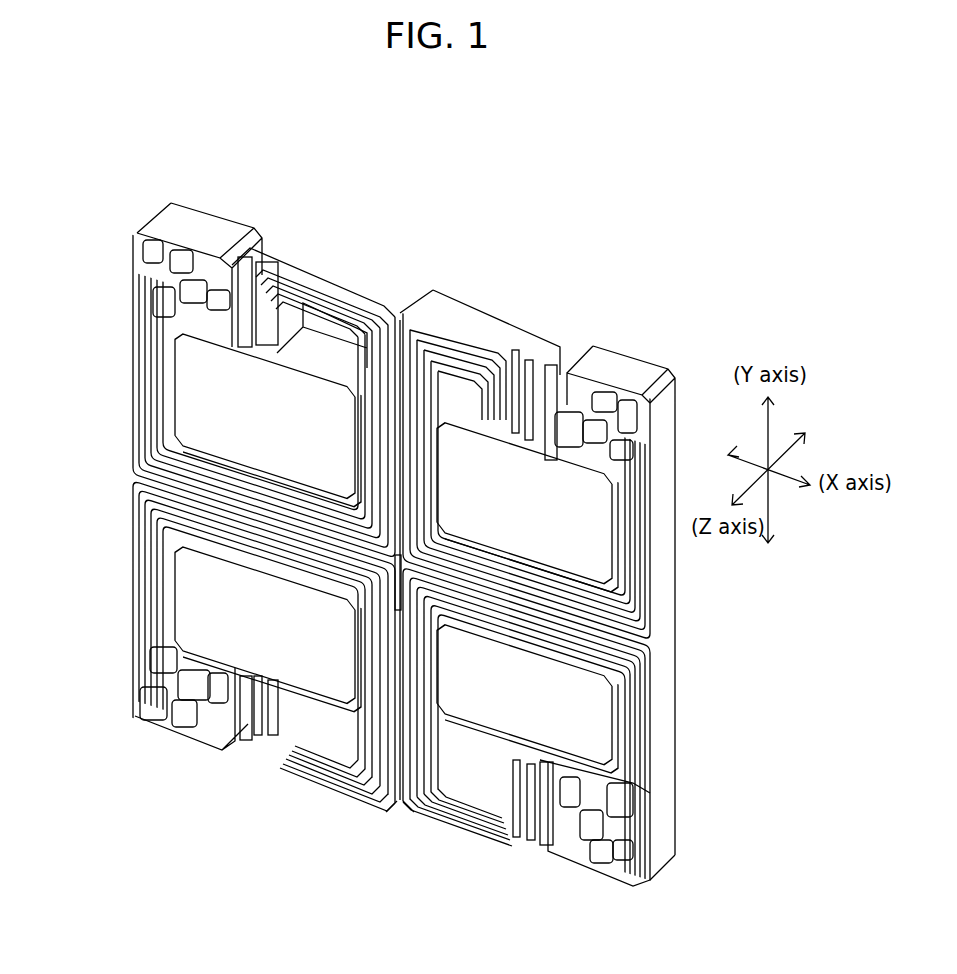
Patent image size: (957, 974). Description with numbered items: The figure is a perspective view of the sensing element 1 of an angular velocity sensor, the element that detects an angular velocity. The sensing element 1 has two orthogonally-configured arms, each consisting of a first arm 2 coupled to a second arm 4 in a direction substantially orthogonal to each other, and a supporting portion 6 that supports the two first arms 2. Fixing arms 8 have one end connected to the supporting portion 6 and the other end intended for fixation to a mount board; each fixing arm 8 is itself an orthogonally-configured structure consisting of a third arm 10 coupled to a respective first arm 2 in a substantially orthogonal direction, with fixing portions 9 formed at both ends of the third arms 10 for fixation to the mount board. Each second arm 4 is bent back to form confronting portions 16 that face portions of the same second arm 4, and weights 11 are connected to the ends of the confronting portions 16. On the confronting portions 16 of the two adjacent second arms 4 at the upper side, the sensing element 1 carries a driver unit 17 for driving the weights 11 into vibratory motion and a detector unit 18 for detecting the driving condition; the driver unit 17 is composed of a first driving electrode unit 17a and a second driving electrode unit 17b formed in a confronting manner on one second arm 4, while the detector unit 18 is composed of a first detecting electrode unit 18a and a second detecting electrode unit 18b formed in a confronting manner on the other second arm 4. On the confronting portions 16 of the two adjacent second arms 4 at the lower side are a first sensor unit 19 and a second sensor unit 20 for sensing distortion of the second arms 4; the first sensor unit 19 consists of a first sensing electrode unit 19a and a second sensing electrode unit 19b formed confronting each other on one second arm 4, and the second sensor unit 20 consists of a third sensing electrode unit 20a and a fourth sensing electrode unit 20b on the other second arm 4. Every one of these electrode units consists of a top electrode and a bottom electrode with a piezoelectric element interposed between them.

The sensing element 1 is at (674, 280).
The first arm 2 is at (392, 565).
The second arm 4 is at (403, 815).
The supporting portion 6 is at (393, 606).
The fixing arm 8 is at (75, 593).
The fixing portion 9 is at (613, 877).
The third arm 10 is at (391, 555).
The weight 11 is at (396, 563).
The confronting portion 16 is at (548, 800).
The driver unit 17 is at (532, 333).
The first driving electrode unit 17a is at (527, 423).
The second driving electrode unit 17b is at (515, 415).
The detector unit 18 is at (307, 265).
The first detecting electrode unit 18a is at (280, 307).
The second detecting electrode unit 18b is at (247, 318).
The first sensor unit 19 is at (494, 855).
The first sensing electrode unit 19a is at (528, 800).
The second sensing electrode unit 19b is at (512, 818).
The second sensor unit 20 is at (245, 784).
The third sensing electrode unit 20a is at (272, 712).
The fourth sensing electrode unit 20b is at (257, 710).